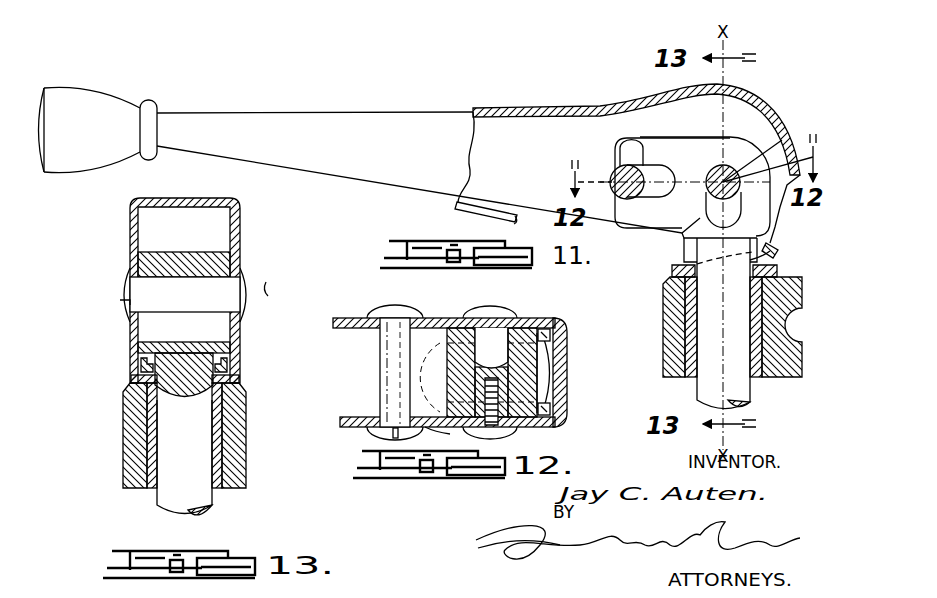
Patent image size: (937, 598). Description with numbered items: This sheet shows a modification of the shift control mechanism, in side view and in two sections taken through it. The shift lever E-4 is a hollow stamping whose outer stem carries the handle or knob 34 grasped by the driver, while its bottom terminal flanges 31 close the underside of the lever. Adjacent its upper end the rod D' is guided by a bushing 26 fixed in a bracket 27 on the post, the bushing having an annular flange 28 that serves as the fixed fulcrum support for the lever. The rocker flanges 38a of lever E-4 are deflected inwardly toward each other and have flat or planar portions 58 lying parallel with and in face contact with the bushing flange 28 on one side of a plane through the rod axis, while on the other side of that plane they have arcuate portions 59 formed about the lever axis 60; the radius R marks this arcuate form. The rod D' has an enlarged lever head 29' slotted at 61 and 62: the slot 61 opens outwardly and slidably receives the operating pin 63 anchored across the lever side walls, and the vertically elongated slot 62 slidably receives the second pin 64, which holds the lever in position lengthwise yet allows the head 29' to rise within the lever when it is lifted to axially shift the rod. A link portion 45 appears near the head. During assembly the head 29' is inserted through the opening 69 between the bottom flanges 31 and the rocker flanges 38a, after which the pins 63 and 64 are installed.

In FIG. 11, the handle or knob 34 is at (82, 96).
In FIG. 11, the shift lever E-4 is at (468, 111).
In FIG. 12, the shift lever E-4 is at (450, 372).
In FIG. 13, the shift lever E-4 is at (236, 222).
In FIG. 11, the bottom lever flanges 31 is at (484, 201).
In FIG. 11, the opening 69 is at (516, 220).
In FIG. 11, the operating pin 63 is at (610, 172).
In FIG. 12, the operating pin 63 is at (384, 342).
In FIG. 11, the slot 61 is at (631, 137).
In FIG. 11, the lever head 29' is at (651, 135).
In FIG. 12, the lever head 29' is at (569, 373).
In FIG. 13, the lever head 29' is at (148, 258).
In FIG. 11, the link 45 is at (628, 160).
In FIG. 11, the second pin 64 is at (724, 176).
In FIG. 13, the second pin 64 is at (208, 287).
In FIG. 11, the lever axis 60 is at (773, 142).
In FIG. 12, the lever axis 60 is at (497, 326).
In FIG. 13, the lever axis 60 is at (267, 293).
In FIG. 11, the slot 62 is at (698, 220).
In FIG. 13, the slot 62 is at (145, 331).
In FIG. 11, the flat or planar portions 58 is at (682, 258).
In FIG. 12, the flat or planar portions 58 is at (434, 322).
In FIG. 11, the annular flange 28 is at (672, 280).
In FIG. 12, the annular flange 28 is at (556, 350).
In FIG. 13, the annular flange 28 is at (132, 380).
In FIG. 11, the bracket 27 is at (684, 302).
In FIG. 13, the bracket 27 is at (128, 424).
In FIG. 11, the bushing 26 is at (670, 326).
In FIG. 13, the bushing 26 is at (128, 452).
In FIG. 11, the rocker flanges 38a is at (778, 248).
In FIG. 12, the rocker flanges 38a is at (552, 330).
In FIG. 13, the rocker flanges 38a is at (140, 365).
In FIG. 11, the arcuate portions 59 is at (760, 263).
In FIG. 12, the arcuate portions 59 is at (520, 326).
In FIG. 11, the rod D' is at (698, 323).
In FIG. 12, the rod D' is at (435, 437).
In FIG. 13, the rod D' is at (159, 461).
In FIG. 11, the radius R is at (766, 243).